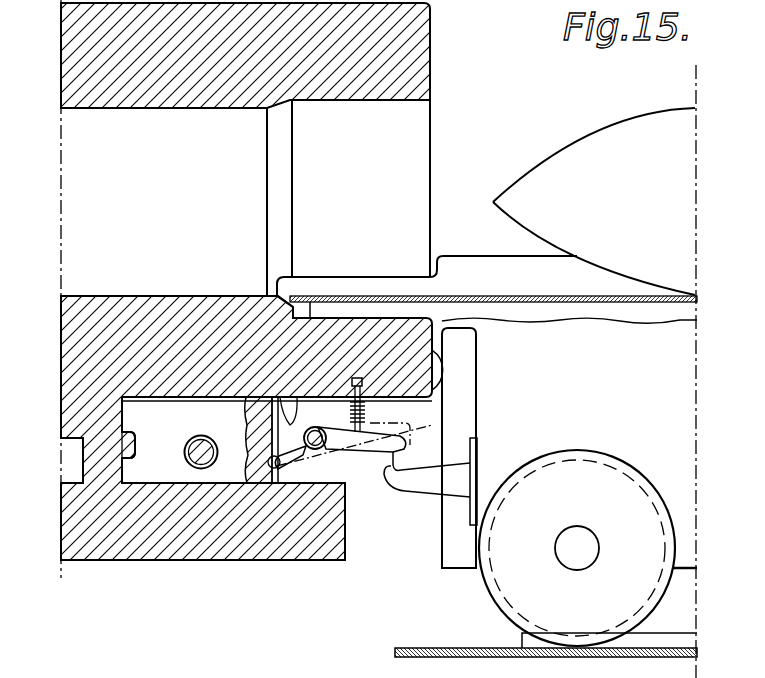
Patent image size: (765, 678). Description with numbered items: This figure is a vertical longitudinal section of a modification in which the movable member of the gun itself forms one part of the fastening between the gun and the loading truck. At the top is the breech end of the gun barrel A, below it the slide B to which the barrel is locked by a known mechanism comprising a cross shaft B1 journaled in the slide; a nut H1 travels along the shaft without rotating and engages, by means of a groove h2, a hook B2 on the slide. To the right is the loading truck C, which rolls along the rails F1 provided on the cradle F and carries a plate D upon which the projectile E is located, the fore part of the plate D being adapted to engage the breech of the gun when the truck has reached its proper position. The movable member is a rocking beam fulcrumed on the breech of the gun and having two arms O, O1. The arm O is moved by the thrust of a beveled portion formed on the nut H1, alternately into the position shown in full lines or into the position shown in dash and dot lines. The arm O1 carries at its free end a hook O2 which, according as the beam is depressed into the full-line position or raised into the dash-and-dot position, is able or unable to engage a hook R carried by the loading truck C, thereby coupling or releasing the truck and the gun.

The breech end of gun barrel A is at (397, 55).
The slide B is at (308, 540).
The cross shaft B1 is at (201, 458).
The hook B2 is at (123, 445).
The loading truck C is at (452, 550).
The plate D is at (476, 272).
The projectile E is at (573, 158).
The cradle F is at (428, 650).
The rails F1 is at (532, 643).
The nut H1 is at (158, 467).
The groove h2 is at (127, 455).
The arm of rocking beam O is at (285, 448).
The arm of rocking beam O1 is at (372, 452).
The hook O2 is at (398, 470).
The hook R is at (388, 482).